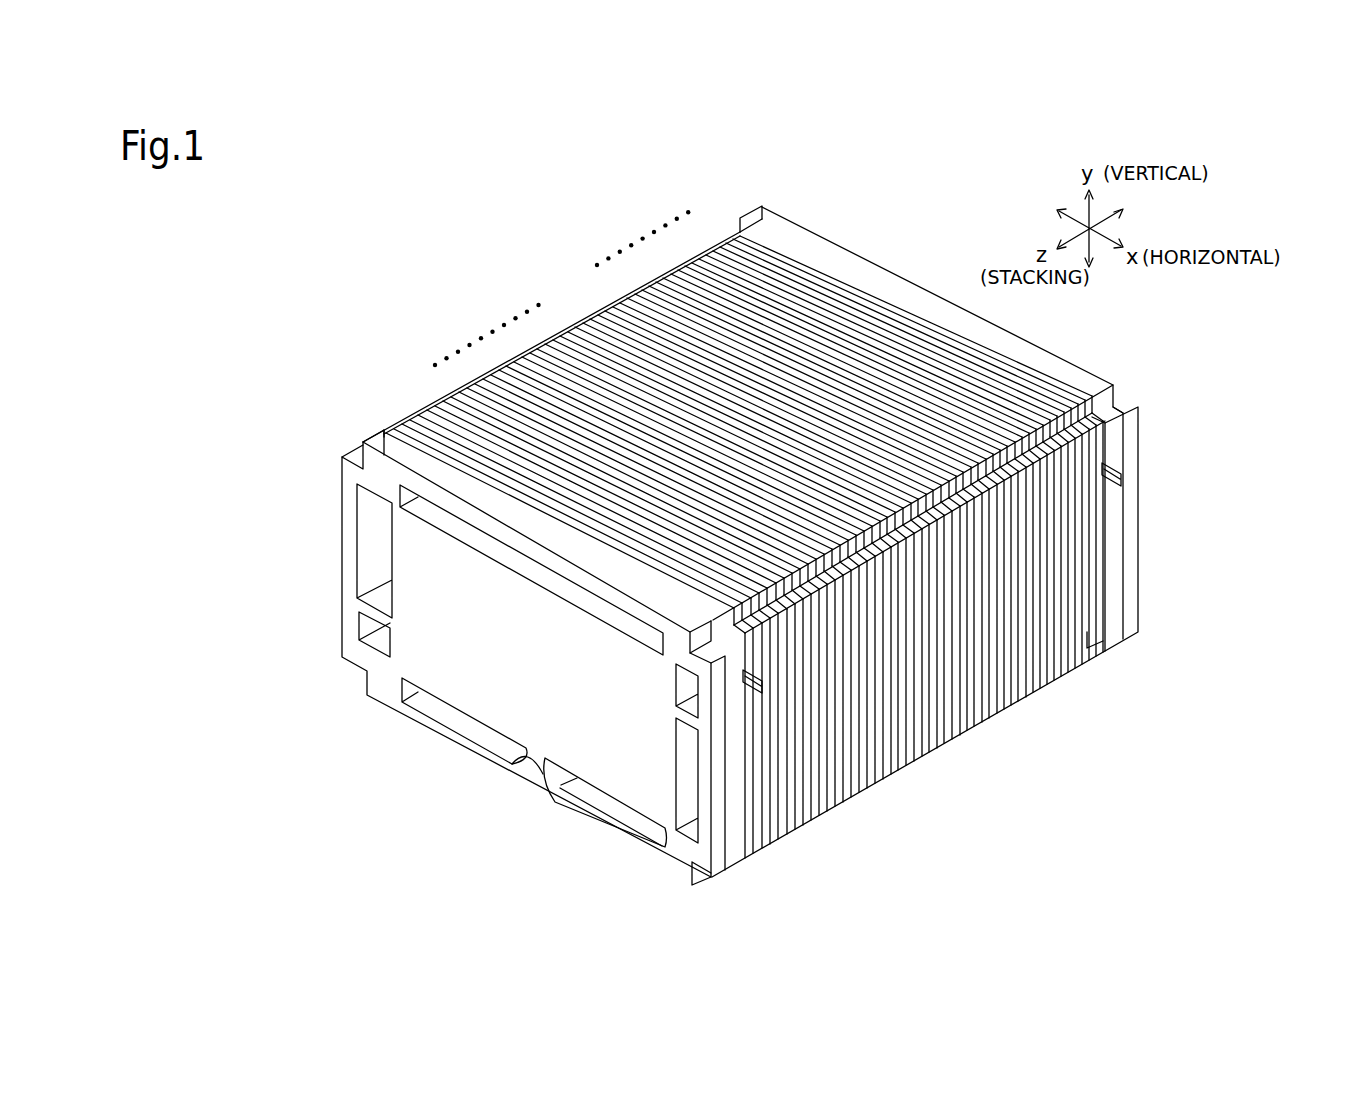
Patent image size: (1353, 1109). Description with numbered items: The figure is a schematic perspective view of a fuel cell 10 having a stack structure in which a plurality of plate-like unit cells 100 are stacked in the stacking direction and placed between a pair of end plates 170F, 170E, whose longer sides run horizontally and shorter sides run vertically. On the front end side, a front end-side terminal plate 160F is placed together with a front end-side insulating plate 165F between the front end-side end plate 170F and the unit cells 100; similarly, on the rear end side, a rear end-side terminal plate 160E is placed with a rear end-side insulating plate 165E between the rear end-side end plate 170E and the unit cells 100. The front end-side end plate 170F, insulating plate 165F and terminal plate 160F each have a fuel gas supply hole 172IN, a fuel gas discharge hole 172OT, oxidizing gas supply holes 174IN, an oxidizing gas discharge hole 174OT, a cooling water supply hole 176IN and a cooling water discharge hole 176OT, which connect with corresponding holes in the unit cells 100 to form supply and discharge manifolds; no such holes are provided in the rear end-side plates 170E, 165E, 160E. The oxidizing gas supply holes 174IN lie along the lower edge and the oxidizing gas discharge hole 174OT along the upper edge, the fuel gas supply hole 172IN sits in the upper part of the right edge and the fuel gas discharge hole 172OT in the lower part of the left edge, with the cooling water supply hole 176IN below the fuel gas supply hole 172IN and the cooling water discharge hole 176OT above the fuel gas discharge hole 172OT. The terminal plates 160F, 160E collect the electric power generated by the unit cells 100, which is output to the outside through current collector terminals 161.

The fuel cell 10 is at (338, 212).
The unit cells 100 is at (588, 342).
The rear end-side terminal plate 160E is at (740, 232).
The rear end-side insulating plate 165E is at (748, 210).
The rear end-side end plate 170E is at (808, 213).
The front end-side terminal plate 160F is at (403, 433).
The front end-side insulating plate 165F is at (387, 437).
The front end-side end plate 170F is at (347, 453).
The cooling water discharge hole 176OT is at (367, 540).
The fuel gas discharge hole 172OT is at (368, 628).
The oxidizing gas discharge hole 174OT is at (522, 581).
The oxidizing gas supply holes 174IN is at (615, 807).
The cooling water supply hole 176IN is at (685, 785).
The fuel gas supply hole 172IN is at (682, 690).
The current collector terminals 161 is at (1130, 493).